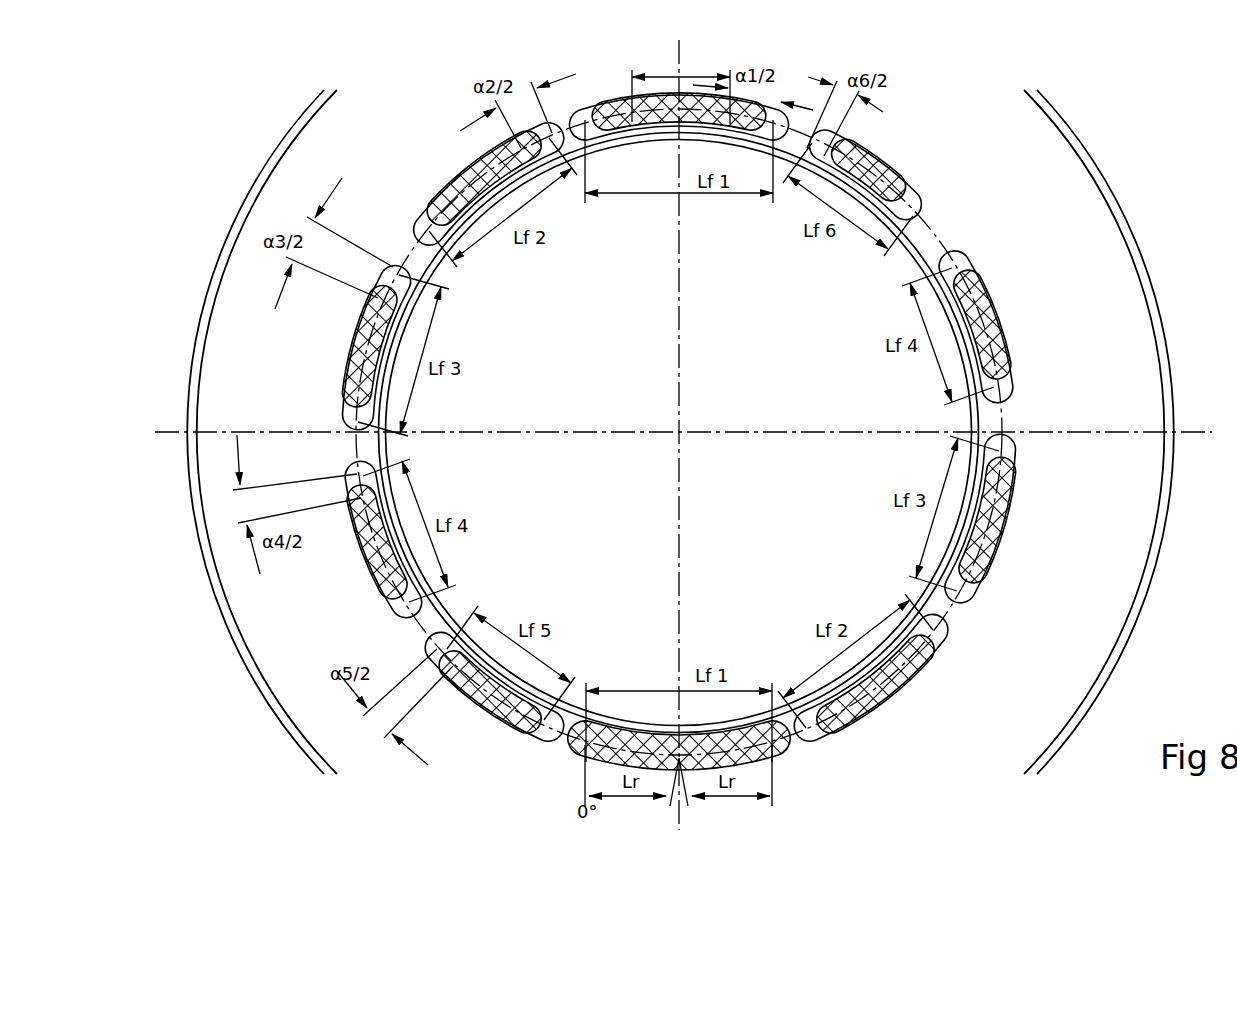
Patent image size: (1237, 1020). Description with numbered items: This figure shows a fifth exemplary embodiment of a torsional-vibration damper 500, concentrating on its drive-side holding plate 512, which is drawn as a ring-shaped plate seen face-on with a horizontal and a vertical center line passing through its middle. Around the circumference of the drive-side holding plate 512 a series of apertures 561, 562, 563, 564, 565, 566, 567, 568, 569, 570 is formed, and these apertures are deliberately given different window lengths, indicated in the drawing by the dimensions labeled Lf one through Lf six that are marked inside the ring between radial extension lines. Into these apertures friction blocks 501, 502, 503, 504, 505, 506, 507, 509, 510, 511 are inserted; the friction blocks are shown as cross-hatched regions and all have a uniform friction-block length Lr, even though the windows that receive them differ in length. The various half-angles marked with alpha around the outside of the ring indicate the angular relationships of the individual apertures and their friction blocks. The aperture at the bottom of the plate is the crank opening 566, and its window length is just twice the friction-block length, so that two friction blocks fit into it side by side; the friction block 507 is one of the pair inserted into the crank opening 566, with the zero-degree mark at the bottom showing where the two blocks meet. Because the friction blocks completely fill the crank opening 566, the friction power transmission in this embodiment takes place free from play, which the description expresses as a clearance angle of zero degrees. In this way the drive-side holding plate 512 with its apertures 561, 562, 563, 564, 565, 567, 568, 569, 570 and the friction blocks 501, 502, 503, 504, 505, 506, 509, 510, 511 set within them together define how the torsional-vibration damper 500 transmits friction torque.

The torsional-vibration damper 500 is at (266, 132).
The drive-side holding plate 512 is at (1022, 152).
The friction block 501 is at (498, 150).
The friction block 502 is at (632, 108).
The friction block 503 is at (907, 177).
The friction block 504 is at (1000, 283).
The friction block 505 is at (1007, 502).
The friction block 506 is at (877, 707).
The friction block 507 is at (779, 762).
The friction block 509 is at (493, 703).
The friction block 510 is at (363, 560).
The friction block 511 is at (360, 313).
The aperture 561 is at (768, 118).
The aperture 562 is at (843, 127).
The aperture 563 is at (1012, 370).
The aperture 564 is at (977, 580).
The aperture 565 is at (834, 738).
The crank opening 566 is at (584, 760).
The aperture 567 is at (532, 724).
The aperture 568 is at (373, 598).
The aperture 569 is at (348, 400).
The aperture 570 is at (437, 205).